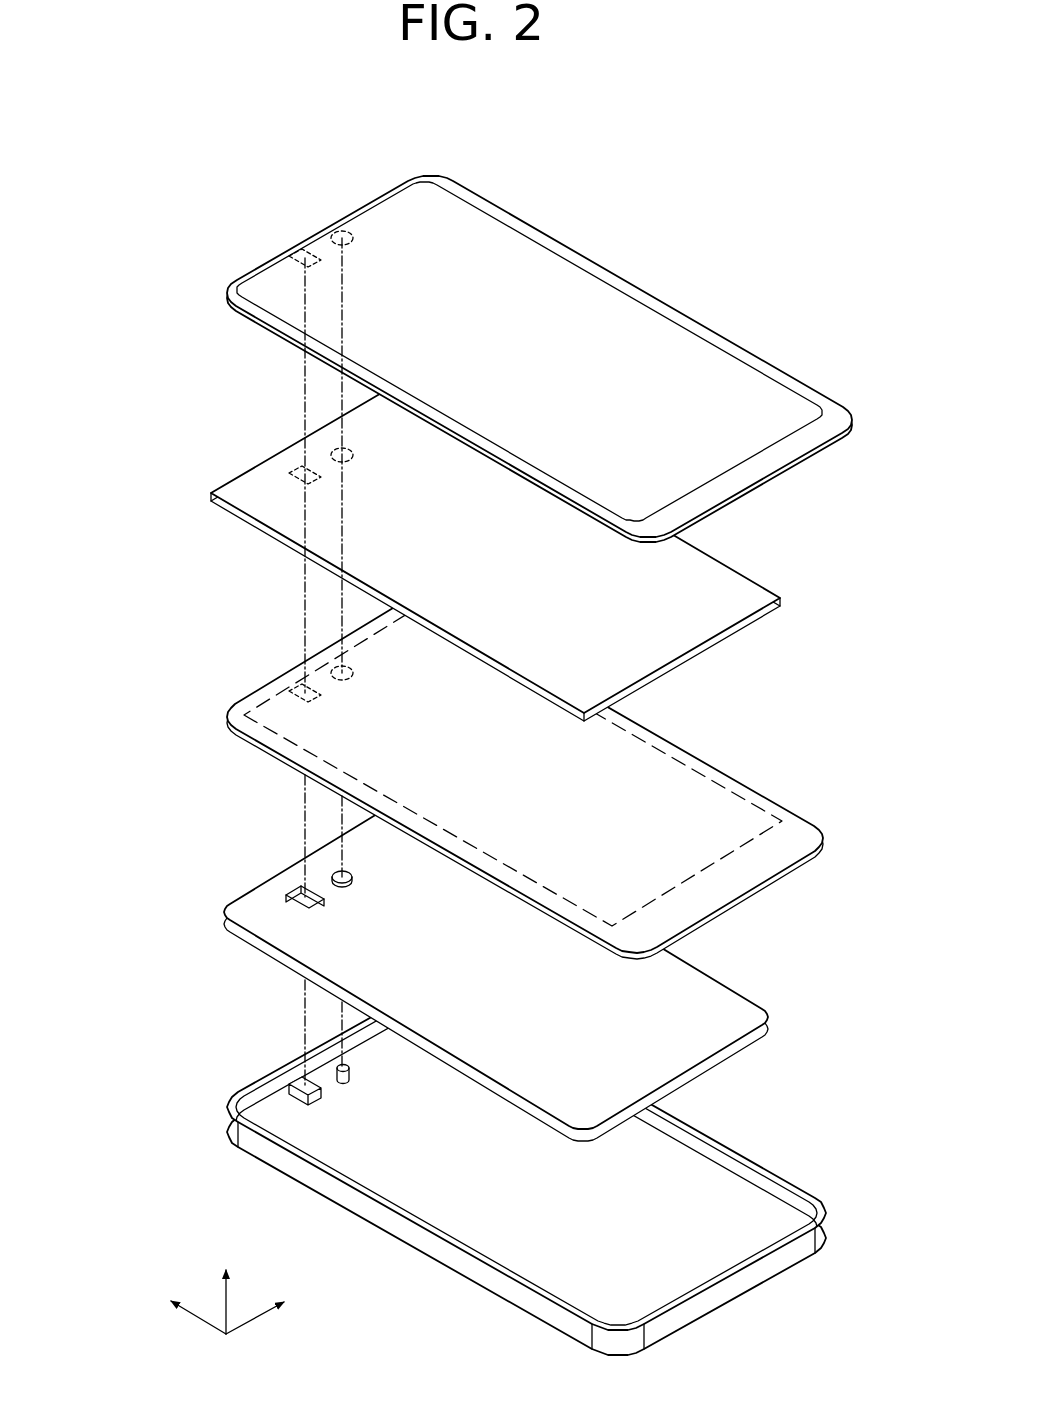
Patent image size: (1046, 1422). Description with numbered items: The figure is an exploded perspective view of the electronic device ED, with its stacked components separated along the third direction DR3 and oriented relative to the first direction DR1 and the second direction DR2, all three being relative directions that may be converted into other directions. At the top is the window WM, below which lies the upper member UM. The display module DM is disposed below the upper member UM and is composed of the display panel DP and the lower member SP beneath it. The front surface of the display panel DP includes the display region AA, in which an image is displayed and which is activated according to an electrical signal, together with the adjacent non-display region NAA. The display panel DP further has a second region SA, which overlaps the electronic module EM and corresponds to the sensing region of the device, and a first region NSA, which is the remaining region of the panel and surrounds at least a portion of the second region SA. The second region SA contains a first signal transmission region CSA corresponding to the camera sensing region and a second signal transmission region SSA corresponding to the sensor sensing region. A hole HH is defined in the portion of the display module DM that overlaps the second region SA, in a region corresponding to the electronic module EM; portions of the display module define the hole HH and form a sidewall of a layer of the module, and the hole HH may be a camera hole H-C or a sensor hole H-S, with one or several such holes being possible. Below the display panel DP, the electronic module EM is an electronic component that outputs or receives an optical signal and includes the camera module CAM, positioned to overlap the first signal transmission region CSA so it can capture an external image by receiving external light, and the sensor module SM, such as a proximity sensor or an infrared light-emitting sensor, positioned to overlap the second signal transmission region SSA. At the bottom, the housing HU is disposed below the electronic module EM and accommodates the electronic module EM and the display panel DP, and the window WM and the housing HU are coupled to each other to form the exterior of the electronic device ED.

The electronic device ED is at (634, 230).
The window WM is at (222, 292).
The upper member UM is at (207, 493).
The display module DM is at (118, 705).
The display panel DP is at (486, 760).
The lower member SP is at (446, 954).
The housing HU is at (474, 1156).
The display region AA is at (712, 800).
The non-display region NAA is at (804, 840).
The second region SA is at (308, 571).
The first region NSA is at (272, 702).
The first signal transmission region CSA is at (309, 688).
The second signal transmission region SSA is at (343, 666).
The hole HH is at (273, 783).
The camera hole H-C is at (297, 893).
The sensor hole H-S is at (337, 870).
The electronic module EM is at (280, 970).
The camera module CAM is at (300, 1082).
The sensor module SM is at (338, 1066).
The first direction DR1 is at (279, 1307).
The second direction DR2 is at (175, 1307).
The third direction DR3 is at (226, 1287).